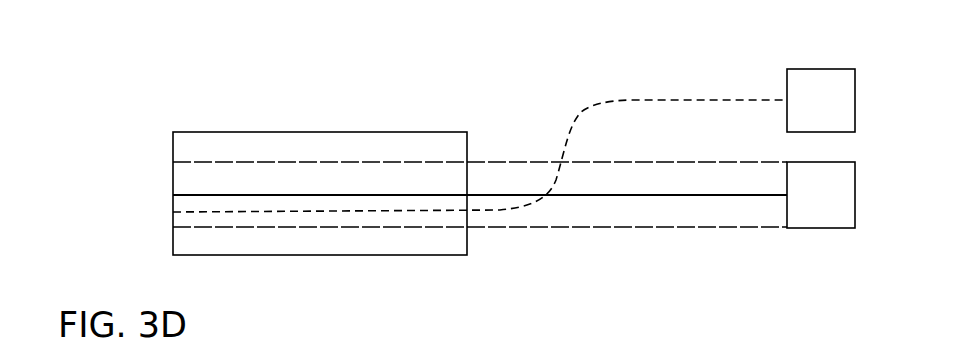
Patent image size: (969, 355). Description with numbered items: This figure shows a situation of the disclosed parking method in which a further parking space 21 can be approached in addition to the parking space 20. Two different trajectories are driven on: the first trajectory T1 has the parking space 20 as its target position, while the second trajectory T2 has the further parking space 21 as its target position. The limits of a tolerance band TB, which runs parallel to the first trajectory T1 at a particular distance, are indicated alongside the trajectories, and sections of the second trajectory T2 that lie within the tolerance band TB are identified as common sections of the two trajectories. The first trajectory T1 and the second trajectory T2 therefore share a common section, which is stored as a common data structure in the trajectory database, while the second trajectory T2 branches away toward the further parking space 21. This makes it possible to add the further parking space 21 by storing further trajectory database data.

The tolerance band TB is at (244, 151).
The first trajectory T1 is at (635, 208).
The second trajectory T2 is at (626, 86).
The further parking space 21 is at (805, 114).
The parking space 20 is at (805, 211).